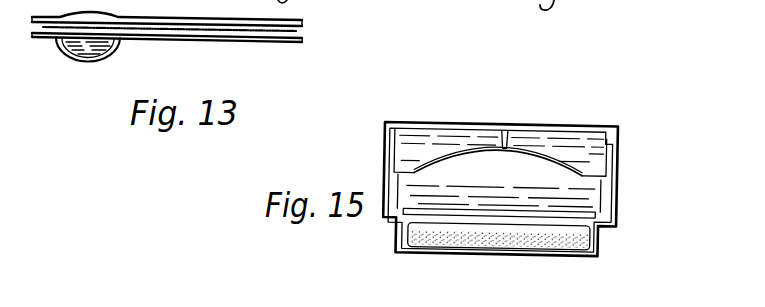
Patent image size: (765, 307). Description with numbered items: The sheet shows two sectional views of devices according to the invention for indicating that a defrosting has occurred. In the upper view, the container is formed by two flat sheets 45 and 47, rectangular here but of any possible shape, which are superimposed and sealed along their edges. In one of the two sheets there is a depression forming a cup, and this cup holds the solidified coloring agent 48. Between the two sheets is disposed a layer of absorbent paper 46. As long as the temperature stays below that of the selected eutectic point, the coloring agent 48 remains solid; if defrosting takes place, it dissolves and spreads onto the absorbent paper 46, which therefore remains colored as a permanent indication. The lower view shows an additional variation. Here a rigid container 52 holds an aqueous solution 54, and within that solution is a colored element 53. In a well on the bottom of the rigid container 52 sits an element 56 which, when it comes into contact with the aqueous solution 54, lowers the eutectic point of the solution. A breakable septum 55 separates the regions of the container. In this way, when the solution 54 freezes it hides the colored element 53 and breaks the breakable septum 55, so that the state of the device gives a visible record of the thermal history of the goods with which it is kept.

In FIG. 13, the flat sheet 45 is at (291, 46).
In FIG. 13, the layer of absorbent paper 46 is at (293, 33).
In FIG. 13, the flat sheet 47 is at (302, 22).
In FIG. 13, the solidified coloring agent 48 is at (103, 42).
In FIG. 15, the rigid container 52 is at (605, 193).
In FIG. 15, the colored element 53 is at (565, 165).
In FIG. 15, the aqueous solution 54 is at (590, 153).
In FIG. 15, the breakable septum 55 is at (573, 212).
In FIG. 15, the element 56 is at (583, 240).